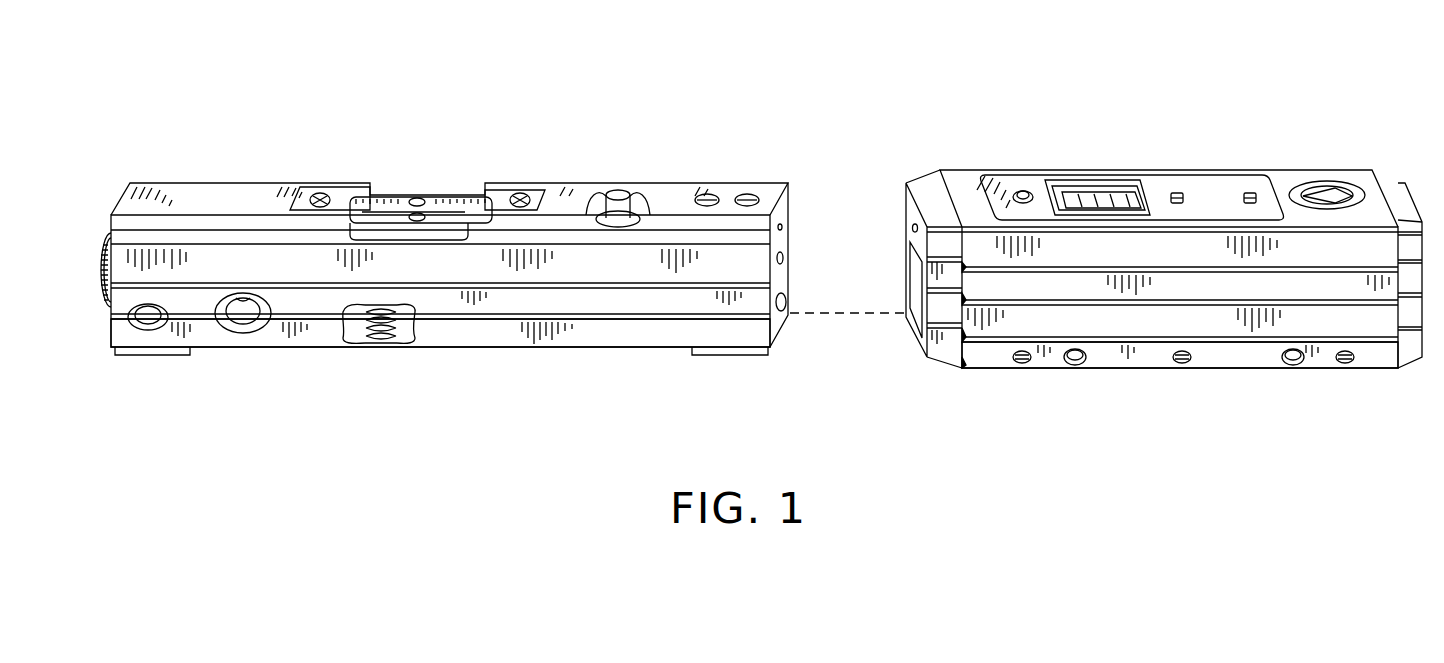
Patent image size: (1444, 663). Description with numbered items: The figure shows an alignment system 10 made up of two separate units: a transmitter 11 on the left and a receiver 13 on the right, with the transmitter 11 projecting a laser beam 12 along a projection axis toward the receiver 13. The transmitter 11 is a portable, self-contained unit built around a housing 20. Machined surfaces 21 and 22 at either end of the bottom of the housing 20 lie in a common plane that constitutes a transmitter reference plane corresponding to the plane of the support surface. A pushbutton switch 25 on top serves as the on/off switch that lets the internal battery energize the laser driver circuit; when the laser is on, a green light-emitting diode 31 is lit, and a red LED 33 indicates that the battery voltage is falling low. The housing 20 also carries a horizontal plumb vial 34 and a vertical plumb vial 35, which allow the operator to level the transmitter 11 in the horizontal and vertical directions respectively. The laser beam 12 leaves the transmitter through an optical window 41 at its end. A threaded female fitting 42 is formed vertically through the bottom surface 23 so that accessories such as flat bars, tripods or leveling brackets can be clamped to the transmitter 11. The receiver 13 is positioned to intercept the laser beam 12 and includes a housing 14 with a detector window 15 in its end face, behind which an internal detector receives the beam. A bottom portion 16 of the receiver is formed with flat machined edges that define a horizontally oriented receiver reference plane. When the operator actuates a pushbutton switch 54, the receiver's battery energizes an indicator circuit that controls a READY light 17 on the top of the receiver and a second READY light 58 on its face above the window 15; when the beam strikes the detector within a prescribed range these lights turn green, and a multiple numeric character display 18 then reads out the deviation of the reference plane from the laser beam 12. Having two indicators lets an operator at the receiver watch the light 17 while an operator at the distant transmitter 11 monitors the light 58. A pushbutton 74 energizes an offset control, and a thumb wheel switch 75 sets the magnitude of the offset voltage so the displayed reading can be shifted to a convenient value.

The alignment system 10 is at (780, 118).
The transmitter 11 is at (400, 140).
The laser beam 12 is at (820, 318).
The receiver 13 is at (1128, 102).
The housing 14 is at (1130, 362).
The detector window 15 is at (913, 327).
The bottom portion 16 is at (985, 370).
The light 17 is at (1022, 190).
The multiple numeric character display 18 is at (1100, 183).
The housing 20 is at (215, 190).
The machined surface 21 is at (142, 355).
The machined surface 22 is at (727, 352).
The bottom surface 23 is at (328, 350).
The pushbutton switch 25 is at (618, 190).
The light-emitting diode 31 is at (707, 196).
The LED 33 is at (750, 196).
The horizontal plumb vial 34 is at (433, 193).
The vertical plumb vial 35 is at (243, 313).
The optical window 41 is at (792, 302).
The threaded female fitting 42 is at (372, 348).
The pushbutton switch 54 is at (1177, 192).
The second READY light 58 is at (906, 208).
The pushbutton 74 is at (1250, 192).
The thumb wheel switch 75 is at (1327, 186).